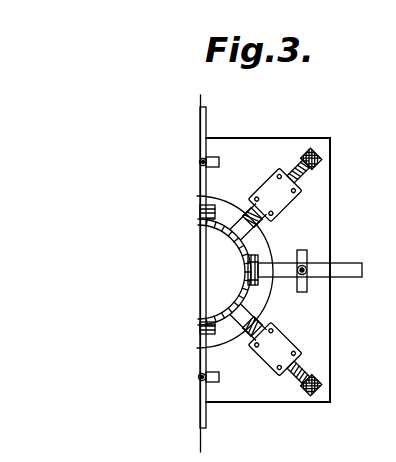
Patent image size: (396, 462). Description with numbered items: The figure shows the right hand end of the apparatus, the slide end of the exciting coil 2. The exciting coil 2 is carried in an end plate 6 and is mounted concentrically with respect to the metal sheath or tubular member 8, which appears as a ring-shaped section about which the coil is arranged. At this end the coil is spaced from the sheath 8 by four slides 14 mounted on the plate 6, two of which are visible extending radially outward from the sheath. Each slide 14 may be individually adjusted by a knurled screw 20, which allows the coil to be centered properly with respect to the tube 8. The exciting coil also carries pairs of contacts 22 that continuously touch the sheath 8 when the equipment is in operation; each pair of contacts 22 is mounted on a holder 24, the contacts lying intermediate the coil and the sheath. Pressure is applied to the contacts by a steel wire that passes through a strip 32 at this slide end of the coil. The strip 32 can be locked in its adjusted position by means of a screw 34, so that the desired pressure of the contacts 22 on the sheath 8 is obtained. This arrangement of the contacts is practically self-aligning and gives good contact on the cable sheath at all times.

The exciting coil 2 is at (222, 197).
The end plate 6 is at (270, 149).
The metal sheath 8 is at (224, 272).
The slide 14 is at (242, 231).
The knurled screw 20 is at (306, 168).
The contact 22 is at (200, 216).
The holder 24 is at (207, 207).
The strip 32 is at (206, 121).
The screw 34 is at (200, 162).